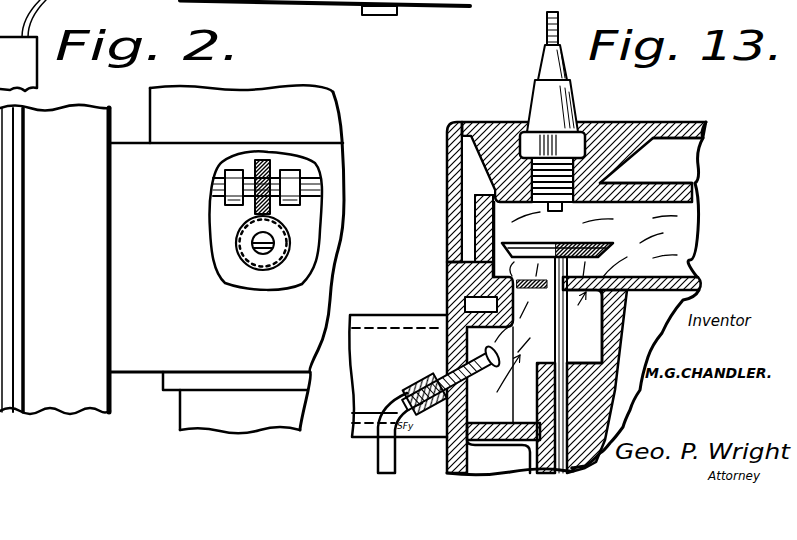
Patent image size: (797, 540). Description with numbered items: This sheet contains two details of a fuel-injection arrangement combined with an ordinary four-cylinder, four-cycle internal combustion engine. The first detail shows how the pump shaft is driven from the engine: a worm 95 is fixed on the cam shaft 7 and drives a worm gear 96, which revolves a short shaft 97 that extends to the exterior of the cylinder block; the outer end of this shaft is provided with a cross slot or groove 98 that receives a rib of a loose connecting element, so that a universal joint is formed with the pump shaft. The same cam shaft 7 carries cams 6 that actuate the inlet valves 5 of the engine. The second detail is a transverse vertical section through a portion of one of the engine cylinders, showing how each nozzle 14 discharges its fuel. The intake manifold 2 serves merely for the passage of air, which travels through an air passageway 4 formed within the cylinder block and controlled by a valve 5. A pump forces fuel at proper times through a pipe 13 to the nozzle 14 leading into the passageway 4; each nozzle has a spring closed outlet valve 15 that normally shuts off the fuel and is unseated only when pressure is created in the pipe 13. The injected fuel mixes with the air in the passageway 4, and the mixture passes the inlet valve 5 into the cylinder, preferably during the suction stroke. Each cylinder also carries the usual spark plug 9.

In FIG. 13, the intake manifold 2 is at (398, 376).
In FIG. 13, the air passageway 4 is at (591, 298).
In FIG. 13, the valve 5 is at (568, 234).
In FIG. 2, the cam 6 is at (262, 158).
In FIG. 2, the cam shaft 7 is at (298, 164).
In FIG. 13, the spark plug 9 is at (531, 111).
In FIG. 13, the pipe 13 is at (366, 433).
In FIG. 13, the nozzle 14 is at (443, 352).
In FIG. 13, the spring closed outlet valve 15 is at (521, 387).
In FIG. 2, the worm 95 is at (210, 193).
In FIG. 2, the worm gear 96 is at (216, 243).
In FIG. 2, the short shaft 97 is at (211, 262).
In FIG. 2, the cross slot or groove 98 is at (246, 282).